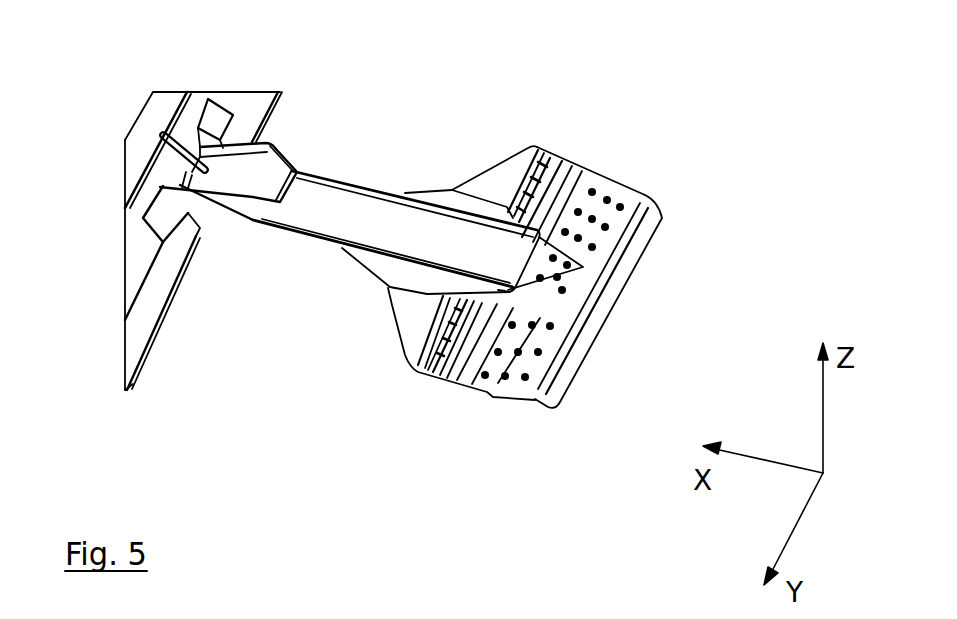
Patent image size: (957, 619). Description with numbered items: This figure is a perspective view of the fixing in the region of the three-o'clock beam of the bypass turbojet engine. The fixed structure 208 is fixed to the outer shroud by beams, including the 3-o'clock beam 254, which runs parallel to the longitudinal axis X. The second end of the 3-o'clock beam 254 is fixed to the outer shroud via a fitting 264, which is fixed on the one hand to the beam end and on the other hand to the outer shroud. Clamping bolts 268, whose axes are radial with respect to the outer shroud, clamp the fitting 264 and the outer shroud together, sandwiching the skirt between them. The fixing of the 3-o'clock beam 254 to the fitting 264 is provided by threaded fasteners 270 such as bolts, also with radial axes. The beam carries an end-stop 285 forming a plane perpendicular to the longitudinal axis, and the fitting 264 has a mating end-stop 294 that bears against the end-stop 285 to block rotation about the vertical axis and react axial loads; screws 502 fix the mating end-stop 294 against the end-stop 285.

The fixed structure 208 is at (145, 147).
The 3-o'clock beam 254 is at (300, 218).
The fitting 264 is at (616, 185).
The clamping bolts 268 is at (588, 177).
The threaded fasteners 270 is at (593, 283).
The end-stop 285 is at (414, 374).
The mating end-stop 294 is at (433, 366).
The screws 502 is at (527, 170).